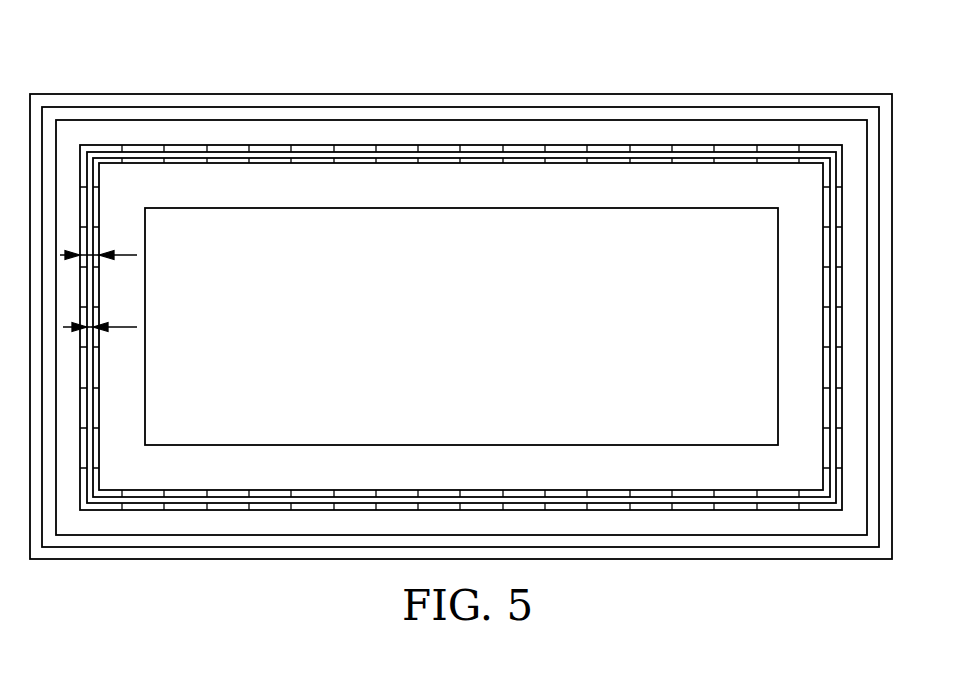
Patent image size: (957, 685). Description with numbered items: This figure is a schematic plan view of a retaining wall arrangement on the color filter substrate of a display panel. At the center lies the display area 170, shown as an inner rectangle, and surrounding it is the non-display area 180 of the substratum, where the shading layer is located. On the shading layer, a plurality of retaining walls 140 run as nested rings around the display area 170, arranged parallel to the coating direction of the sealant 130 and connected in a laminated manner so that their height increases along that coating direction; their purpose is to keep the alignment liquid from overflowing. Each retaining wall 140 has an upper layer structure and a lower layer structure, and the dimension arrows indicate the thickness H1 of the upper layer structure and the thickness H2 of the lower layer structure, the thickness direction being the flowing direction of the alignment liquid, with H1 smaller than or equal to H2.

The sealant 130 is at (190, 117).
The retaining walls 140 is at (317, 150).
The display area 170 is at (478, 235).
The non-display area 180 is at (607, 101).
The thickness of the upper layer structure H1 is at (101, 314).
The thickness of the lower layer structure H2 is at (99, 242).